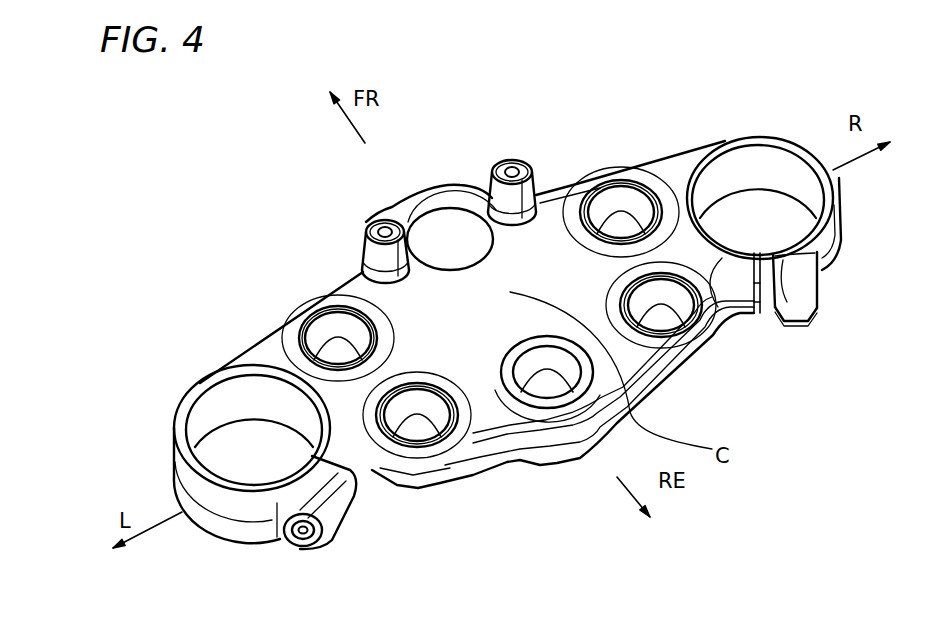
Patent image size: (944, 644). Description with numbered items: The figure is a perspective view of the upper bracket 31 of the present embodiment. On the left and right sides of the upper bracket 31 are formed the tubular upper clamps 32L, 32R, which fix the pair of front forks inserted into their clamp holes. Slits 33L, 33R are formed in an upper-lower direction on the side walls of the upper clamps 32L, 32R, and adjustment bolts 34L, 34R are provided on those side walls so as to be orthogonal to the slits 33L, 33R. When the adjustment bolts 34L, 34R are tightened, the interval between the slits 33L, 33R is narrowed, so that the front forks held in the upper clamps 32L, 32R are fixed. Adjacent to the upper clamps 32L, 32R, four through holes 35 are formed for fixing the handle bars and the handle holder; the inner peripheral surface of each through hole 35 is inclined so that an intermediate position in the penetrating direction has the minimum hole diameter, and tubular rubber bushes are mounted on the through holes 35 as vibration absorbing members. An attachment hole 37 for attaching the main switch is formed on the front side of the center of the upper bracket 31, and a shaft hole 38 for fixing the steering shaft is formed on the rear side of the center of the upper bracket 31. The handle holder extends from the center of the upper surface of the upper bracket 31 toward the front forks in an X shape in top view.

The upper bracket 31 is at (287, 250).
The upper clamp 32L is at (215, 380).
The upper clamp 32R is at (783, 141).
The slit 33L is at (362, 494).
The slit 33R is at (755, 316).
The adjustment bolt 34L is at (298, 545).
The adjustment bolt 34R is at (818, 302).
The through hole 35 is at (627, 200).
The attachment hole 37 is at (430, 212).
The shaft hole 38 is at (560, 405).